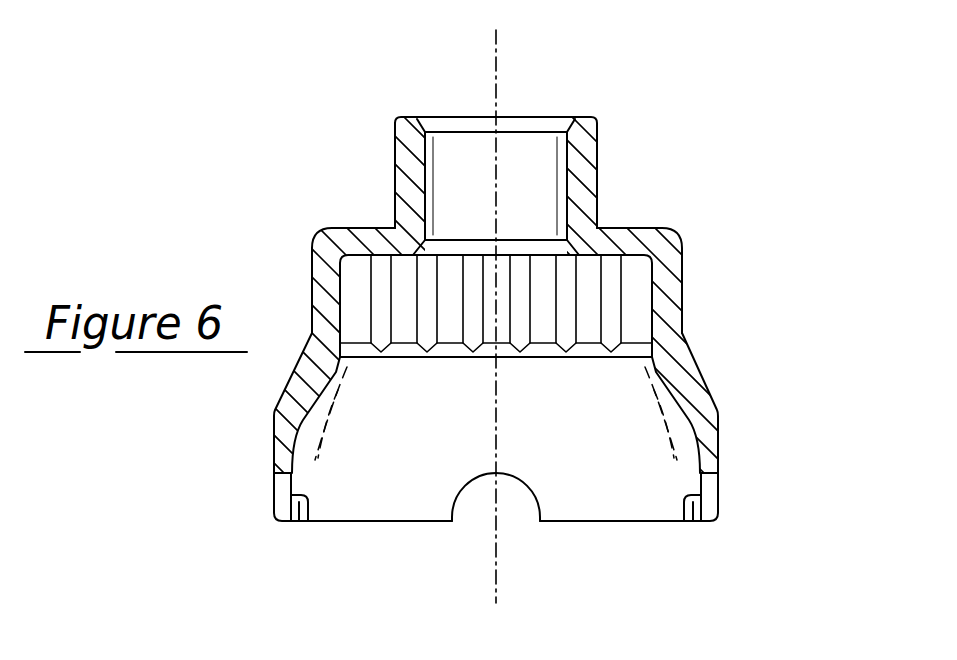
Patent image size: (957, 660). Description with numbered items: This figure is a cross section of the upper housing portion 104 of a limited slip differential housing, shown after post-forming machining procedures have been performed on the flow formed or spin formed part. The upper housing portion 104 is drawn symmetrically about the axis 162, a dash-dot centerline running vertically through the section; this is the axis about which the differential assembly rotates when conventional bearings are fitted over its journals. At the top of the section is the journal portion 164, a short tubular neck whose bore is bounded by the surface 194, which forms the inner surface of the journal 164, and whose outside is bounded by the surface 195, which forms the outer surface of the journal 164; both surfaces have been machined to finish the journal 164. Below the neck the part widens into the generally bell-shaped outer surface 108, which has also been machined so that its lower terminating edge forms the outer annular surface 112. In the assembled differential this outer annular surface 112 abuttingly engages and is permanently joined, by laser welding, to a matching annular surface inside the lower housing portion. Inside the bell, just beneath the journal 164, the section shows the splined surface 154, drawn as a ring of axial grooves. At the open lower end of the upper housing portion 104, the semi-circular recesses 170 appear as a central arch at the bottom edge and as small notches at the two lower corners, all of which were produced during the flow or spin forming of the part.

The upper housing portion 104 is at (701, 110).
The bell-shaped outer surface 108 is at (668, 228).
The outer annular surface 112 is at (718, 450).
The splined surface 154 is at (628, 303).
The axis 162 is at (495, 78).
The journal portion 164 is at (395, 178).
The semi-circular recesses 170 is at (307, 521).
The inner surface of journal 194 is at (568, 178).
The outer surface of journal 195 is at (395, 198).